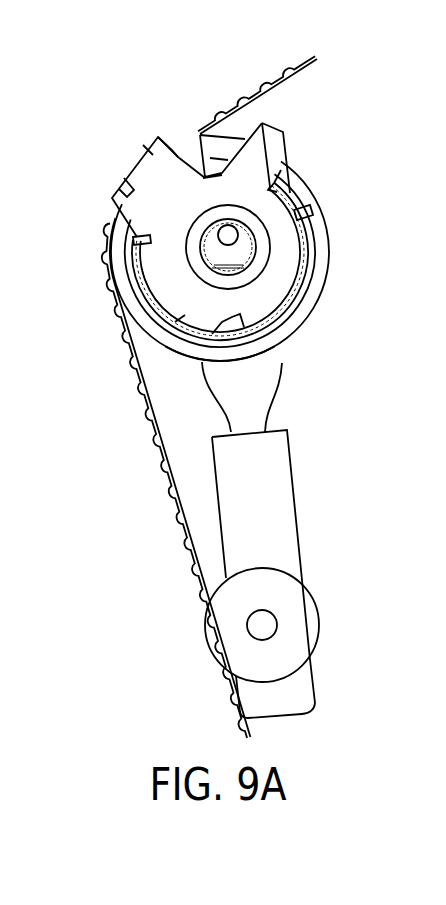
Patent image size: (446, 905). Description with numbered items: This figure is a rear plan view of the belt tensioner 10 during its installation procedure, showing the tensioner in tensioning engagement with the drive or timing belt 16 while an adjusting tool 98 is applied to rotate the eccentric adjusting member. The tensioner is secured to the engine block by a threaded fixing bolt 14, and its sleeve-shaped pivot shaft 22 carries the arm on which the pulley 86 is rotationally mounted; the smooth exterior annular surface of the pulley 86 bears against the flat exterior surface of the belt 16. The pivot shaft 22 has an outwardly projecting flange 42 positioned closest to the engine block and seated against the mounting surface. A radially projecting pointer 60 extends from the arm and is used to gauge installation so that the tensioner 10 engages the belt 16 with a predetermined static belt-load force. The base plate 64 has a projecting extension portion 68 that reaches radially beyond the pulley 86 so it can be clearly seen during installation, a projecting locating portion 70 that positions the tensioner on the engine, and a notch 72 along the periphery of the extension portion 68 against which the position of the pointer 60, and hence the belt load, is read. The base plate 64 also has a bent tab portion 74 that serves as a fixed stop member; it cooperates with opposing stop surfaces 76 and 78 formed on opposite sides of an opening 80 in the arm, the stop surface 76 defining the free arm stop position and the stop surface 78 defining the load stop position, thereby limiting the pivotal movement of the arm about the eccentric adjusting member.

The belt tensioner 10 is at (345, 191).
The threaded fixing bolt 14 is at (229, 238).
The drive or timing belt 16 is at (218, 705).
The pivot shaft 22 is at (267, 207).
The projecting flange 42 is at (263, 242).
The pointer 60 is at (190, 130).
The base plate 64 is at (155, 157).
The extension portion 68 is at (132, 168).
The locating portion 70 is at (278, 134).
The notch 72 is at (125, 178).
The bent tab portion 74 is at (168, 318).
The stop surface 76 is at (198, 340).
The stop surface 78 is at (134, 242).
The opening 80 is at (130, 273).
The pulley 86 is at (294, 322).
The adjusting tool 98 is at (278, 502).